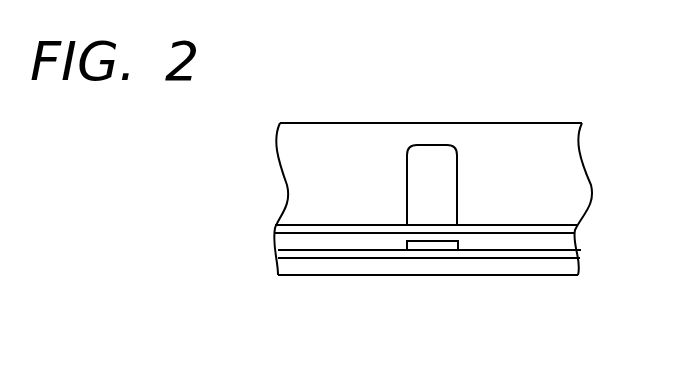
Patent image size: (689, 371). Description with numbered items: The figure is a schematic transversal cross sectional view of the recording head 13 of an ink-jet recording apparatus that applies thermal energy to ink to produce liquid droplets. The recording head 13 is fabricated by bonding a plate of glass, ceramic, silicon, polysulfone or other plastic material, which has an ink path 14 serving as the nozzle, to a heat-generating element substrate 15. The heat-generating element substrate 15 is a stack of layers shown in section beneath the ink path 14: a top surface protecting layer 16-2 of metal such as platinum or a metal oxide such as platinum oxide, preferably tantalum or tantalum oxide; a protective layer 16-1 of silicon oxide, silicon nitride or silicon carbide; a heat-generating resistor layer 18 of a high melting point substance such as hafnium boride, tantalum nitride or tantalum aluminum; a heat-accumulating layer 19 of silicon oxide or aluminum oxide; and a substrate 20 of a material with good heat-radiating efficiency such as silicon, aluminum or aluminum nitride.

The recording head 13 is at (333, 123).
The ink path 14 is at (432, 145).
The heat-generating element substrate 15 is at (587, 225).
The top surface protecting layer 16-2 is at (297, 230).
The protective layer 16-1 is at (367, 243).
The heat-generating resistor layer 18 is at (435, 245).
The heat-accumulating layer 19 is at (479, 257).
The substrate 20 is at (537, 265).